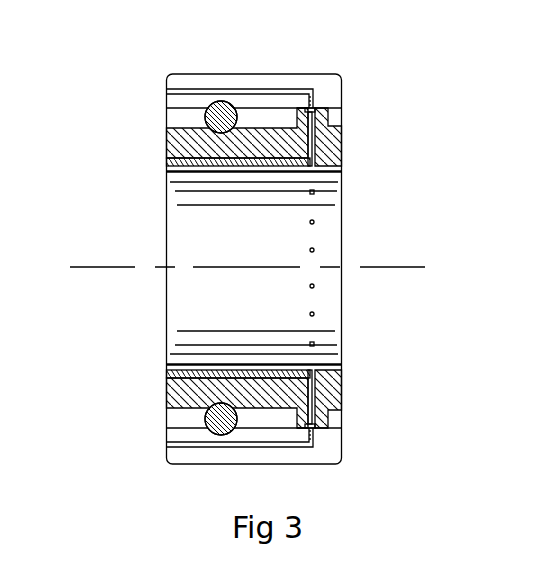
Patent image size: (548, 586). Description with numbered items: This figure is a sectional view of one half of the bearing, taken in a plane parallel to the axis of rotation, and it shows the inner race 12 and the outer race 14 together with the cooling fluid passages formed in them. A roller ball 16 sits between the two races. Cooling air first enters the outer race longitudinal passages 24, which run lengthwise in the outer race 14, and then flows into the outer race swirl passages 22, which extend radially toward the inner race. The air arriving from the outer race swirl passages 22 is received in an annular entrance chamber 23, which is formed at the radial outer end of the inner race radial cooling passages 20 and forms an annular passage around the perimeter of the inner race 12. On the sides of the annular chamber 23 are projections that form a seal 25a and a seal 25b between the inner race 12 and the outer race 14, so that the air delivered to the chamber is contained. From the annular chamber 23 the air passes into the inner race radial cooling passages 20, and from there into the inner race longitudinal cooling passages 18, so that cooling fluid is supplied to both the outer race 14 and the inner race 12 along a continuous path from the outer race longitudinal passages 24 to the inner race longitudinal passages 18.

The inner race 12 is at (173, 138).
The outer race 14 is at (190, 82).
The roller ball 16 is at (205, 117).
The inner race longitudinal cooling passage 18 is at (168, 174).
The inner race radial cooling passage 20 is at (315, 132).
The outer race swirl passage 22 is at (312, 84).
The annular entrance chamber 23 is at (318, 110).
The outer race longitudinal passage 24 is at (215, 90).
The seal 25a is at (295, 106).
The seal 25b is at (343, 118).